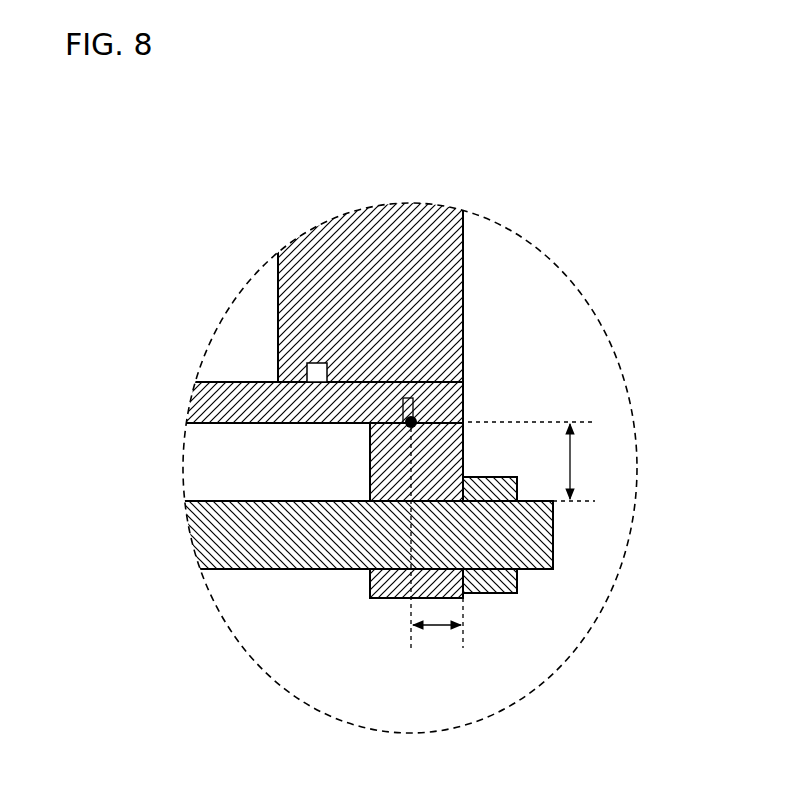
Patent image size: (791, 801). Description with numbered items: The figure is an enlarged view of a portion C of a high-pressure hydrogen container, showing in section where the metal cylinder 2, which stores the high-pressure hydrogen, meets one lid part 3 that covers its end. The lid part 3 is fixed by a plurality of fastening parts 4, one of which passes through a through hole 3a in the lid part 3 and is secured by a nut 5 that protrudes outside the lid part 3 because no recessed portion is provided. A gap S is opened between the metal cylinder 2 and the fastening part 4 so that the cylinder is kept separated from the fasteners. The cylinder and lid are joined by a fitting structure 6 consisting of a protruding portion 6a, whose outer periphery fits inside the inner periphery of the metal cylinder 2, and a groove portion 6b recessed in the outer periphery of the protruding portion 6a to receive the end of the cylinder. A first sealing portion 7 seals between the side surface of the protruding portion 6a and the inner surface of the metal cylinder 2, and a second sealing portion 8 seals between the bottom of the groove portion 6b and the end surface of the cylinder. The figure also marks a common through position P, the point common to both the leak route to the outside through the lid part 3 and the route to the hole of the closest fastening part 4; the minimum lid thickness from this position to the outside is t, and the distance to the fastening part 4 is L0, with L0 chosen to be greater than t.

The metal cylinder 2 is at (230, 408).
The lid part 3 is at (463, 292).
The through hole 3a is at (386, 598).
The fastening part 4 is at (296, 553).
The nut 5 is at (517, 592).
The fitting structure 6 is at (226, 360).
The protruding portion 6a is at (318, 343).
The groove portion 6b is at (463, 358).
The first sealing portion 7 is at (303, 377).
The second sealing portion 8 is at (413, 399).
The gap S is at (222, 482).
The common through position P is at (370, 458).
The portion C is at (633, 526).
The distance L0 is at (601, 461).
The minimum thickness t is at (437, 637).